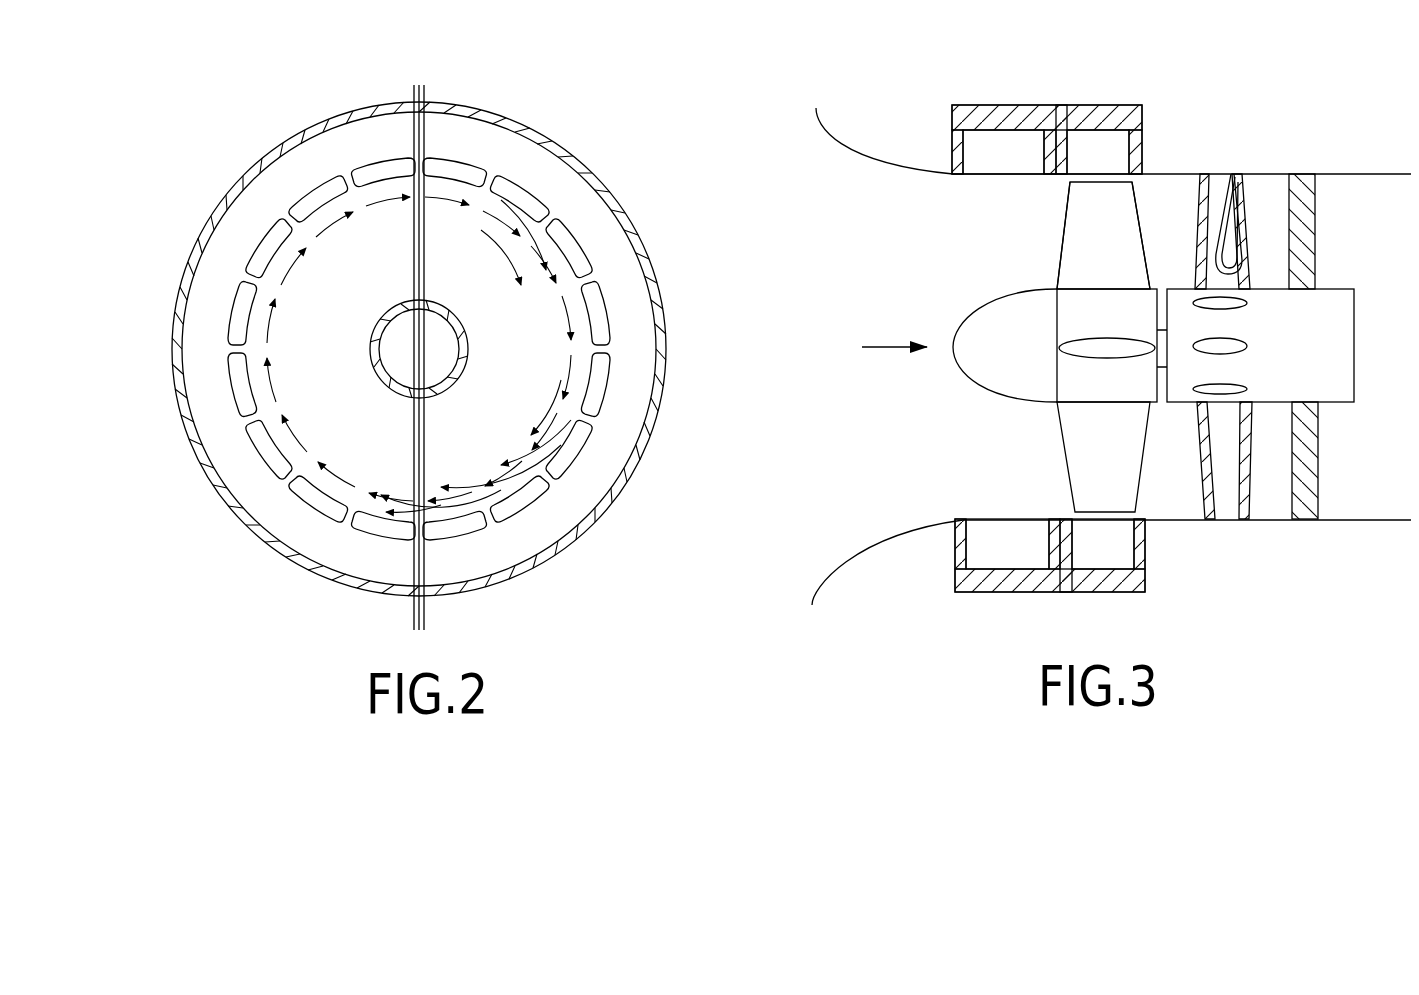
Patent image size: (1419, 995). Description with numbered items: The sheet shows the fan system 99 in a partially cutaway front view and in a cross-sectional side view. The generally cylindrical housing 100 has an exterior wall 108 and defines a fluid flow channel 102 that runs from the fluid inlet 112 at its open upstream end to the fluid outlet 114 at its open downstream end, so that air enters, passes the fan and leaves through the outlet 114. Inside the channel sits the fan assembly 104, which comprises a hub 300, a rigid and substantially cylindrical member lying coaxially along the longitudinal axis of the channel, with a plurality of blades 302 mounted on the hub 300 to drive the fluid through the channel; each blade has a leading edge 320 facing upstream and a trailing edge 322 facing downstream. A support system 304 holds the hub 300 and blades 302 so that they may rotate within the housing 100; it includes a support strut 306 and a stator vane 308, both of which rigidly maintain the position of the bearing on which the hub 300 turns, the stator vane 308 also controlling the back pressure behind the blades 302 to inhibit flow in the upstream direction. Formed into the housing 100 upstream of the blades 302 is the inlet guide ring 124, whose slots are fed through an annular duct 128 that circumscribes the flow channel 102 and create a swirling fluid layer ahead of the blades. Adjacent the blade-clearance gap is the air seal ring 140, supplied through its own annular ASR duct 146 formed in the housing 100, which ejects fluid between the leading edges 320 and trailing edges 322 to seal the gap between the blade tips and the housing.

In FIG. 3, the fan system 99 is at (1279, 79).
In FIG. 3, the housing 100 is at (884, 521).
In FIG. 3, the fluid flow channel 102 is at (901, 425).
In FIG. 2, the fan assembly 104 is at (440, 340).
In FIG. 2, the exterior wall 108 is at (207, 250).
In FIG. 3, the fluid inlet 112 is at (850, 539).
In FIG. 3, the fluid outlet 114 is at (1327, 231).
In FIG. 2, the inlet guide ring 124 is at (548, 190).
In FIG. 3, the inlet guide ring 124 is at (993, 140).
In FIG. 2, the duct 128 is at (548, 520).
In FIG. 2, the air seal ring 140 is at (324, 170).
In FIG. 3, the air seal ring 140 is at (1138, 113).
In FIG. 2, the ASR duct 146 is at (198, 363).
In FIG. 3, the hub 300 is at (1055, 405).
In FIG. 3, the blades 302 is at (1057, 257).
In FIG. 3, the support system 304 is at (1316, 428).
In FIG. 3, the support strut 306 is at (1298, 520).
In FIG. 3, the stator vane 308 is at (1218, 178).
In FIG. 3, the leading edges 320 is at (1065, 207).
In FIG. 3, the trailing edges 322 is at (1133, 195).